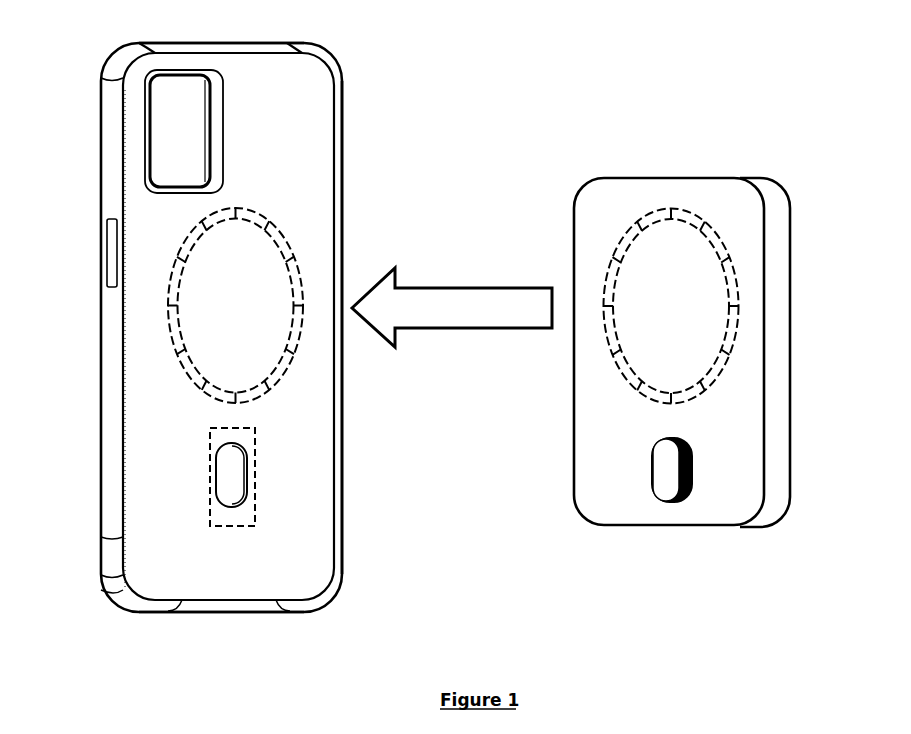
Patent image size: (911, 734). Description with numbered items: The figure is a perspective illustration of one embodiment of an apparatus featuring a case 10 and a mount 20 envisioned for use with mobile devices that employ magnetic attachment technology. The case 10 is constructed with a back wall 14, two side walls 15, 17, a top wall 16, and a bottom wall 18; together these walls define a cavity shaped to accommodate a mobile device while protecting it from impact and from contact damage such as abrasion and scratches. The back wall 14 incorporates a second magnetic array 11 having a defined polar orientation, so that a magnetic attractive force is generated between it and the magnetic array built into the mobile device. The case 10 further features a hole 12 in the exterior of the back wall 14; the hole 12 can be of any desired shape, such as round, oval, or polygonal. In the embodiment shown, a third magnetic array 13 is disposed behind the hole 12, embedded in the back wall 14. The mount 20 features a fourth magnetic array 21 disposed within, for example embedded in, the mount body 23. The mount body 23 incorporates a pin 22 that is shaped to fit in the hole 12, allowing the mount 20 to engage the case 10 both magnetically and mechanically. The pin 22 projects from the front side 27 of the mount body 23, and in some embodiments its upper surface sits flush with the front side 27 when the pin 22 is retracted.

The case 10 is at (292, 327).
The second magnetic array 11 is at (190, 372).
The hole 12 is at (230, 490).
The third magnetic array 13 is at (255, 517).
The back wall 14 is at (292, 136).
The side wall 15 is at (115, 173).
The top wall 16 is at (185, 45).
The side wall 17 is at (337, 220).
The bottom wall 18 is at (252, 605).
The mount 20 is at (660, 349).
The fourth magnetic array 21 is at (623, 377).
The pin 22 is at (667, 485).
The mount body 23 is at (780, 290).
The front side 27 is at (620, 218).